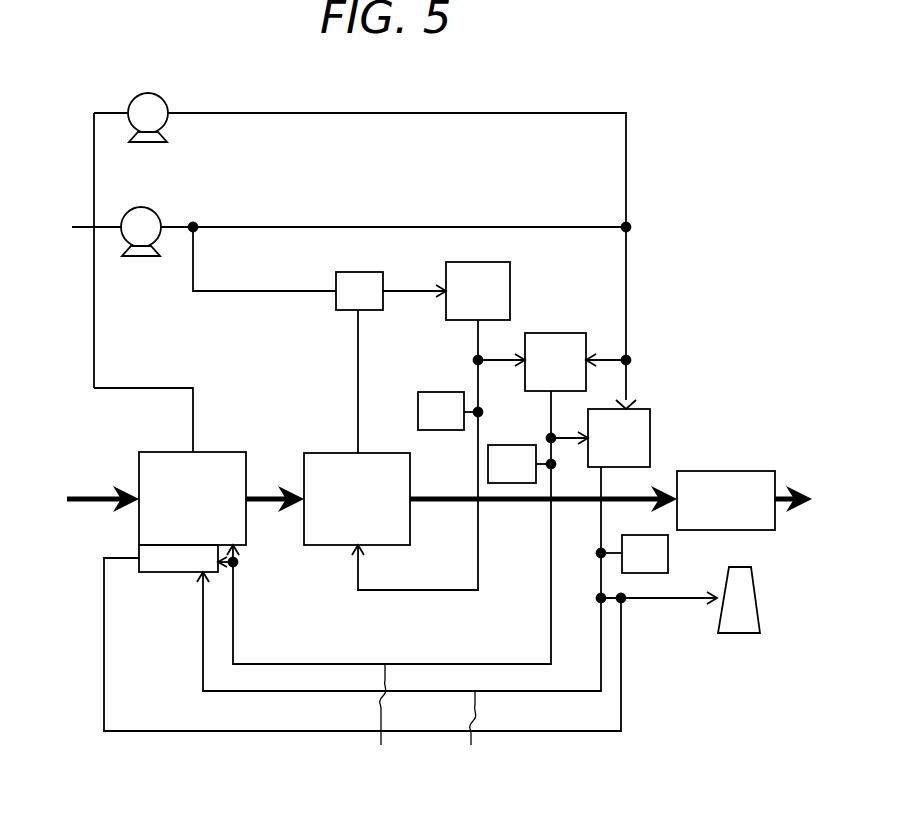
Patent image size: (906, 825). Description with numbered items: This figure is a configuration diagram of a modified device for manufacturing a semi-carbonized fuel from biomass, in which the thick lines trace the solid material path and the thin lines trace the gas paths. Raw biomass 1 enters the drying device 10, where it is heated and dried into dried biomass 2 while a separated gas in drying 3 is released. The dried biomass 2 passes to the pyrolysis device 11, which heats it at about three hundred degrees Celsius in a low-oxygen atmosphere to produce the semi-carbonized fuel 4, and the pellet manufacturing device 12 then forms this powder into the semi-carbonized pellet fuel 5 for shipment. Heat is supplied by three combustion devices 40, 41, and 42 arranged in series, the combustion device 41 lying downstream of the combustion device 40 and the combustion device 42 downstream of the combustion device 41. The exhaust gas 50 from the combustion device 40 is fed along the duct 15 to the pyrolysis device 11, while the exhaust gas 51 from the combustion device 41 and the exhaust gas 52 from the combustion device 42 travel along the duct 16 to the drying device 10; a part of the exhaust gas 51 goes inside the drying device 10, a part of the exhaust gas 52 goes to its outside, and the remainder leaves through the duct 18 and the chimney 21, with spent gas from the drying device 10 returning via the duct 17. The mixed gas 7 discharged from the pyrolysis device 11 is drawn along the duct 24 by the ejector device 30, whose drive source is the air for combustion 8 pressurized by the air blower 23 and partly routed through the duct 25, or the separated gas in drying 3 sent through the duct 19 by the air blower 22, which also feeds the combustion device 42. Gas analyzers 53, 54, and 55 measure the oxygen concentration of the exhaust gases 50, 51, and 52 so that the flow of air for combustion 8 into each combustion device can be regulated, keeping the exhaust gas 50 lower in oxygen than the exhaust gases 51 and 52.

The raw biomass 1 is at (94, 499).
The dried biomass 2 is at (266, 502).
The separated gas in drying 3 is at (94, 378).
The semi-carbonized fuel 4 is at (451, 503).
The semi-carbonized pellet fuel 5 is at (805, 499).
The mixed gas 7 is at (358, 382).
The air for combustion 8 is at (341, 227).
The drying device 10 is at (165, 452).
The pyrolysis device 11 is at (330, 452).
The pellet manufacturing device 12 is at (735, 471).
The duct 15 is at (437, 590).
The duct 16 is at (402, 719).
The duct 17 is at (281, 731).
The duct 18 is at (650, 599).
The duct 19 is at (94, 336).
The chimney 21 is at (752, 591).
The air blower 22 is at (150, 143).
The air blower 23 is at (143, 257).
The duct 24 is at (358, 336).
The duct 25 is at (198, 258).
The ejector device 30 is at (353, 276).
The combustion device 40 is at (481, 268).
The combustion device 41 is at (550, 340).
The combustion device 42 is at (643, 416).
The exhaust gas 50 is at (358, 572).
The exhaust gas 51 is at (233, 623).
The exhaust gas 52 is at (203, 650).
The gas analyzer 53 is at (425, 400).
The gas analyzer 54 is at (509, 450).
The gas analyzer 55 is at (663, 562).